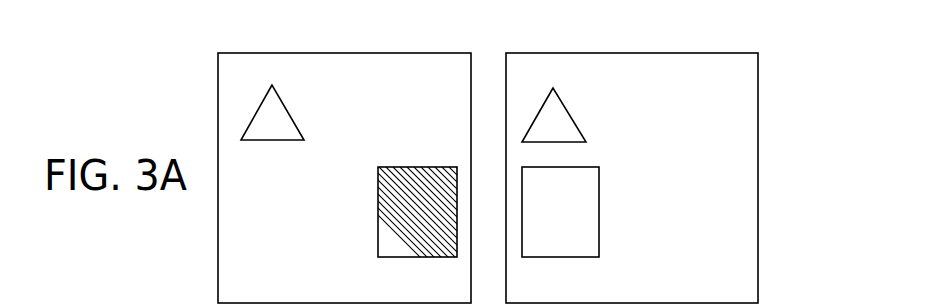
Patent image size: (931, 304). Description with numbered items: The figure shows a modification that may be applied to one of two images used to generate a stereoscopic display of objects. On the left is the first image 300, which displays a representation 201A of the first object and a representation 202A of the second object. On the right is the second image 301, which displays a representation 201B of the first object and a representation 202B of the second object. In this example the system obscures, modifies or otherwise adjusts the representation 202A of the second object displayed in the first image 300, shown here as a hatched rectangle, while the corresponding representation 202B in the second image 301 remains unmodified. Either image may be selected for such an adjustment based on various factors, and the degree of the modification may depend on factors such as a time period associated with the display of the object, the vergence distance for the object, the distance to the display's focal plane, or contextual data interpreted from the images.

The first image 300 is at (304, 272).
The second image 301 is at (697, 273).
The representation of the first object 201A is at (271, 86).
The representation of the second object 202A is at (402, 167).
The representation of the first object 201B is at (552, 88).
The representation of the second object 202B is at (599, 197).